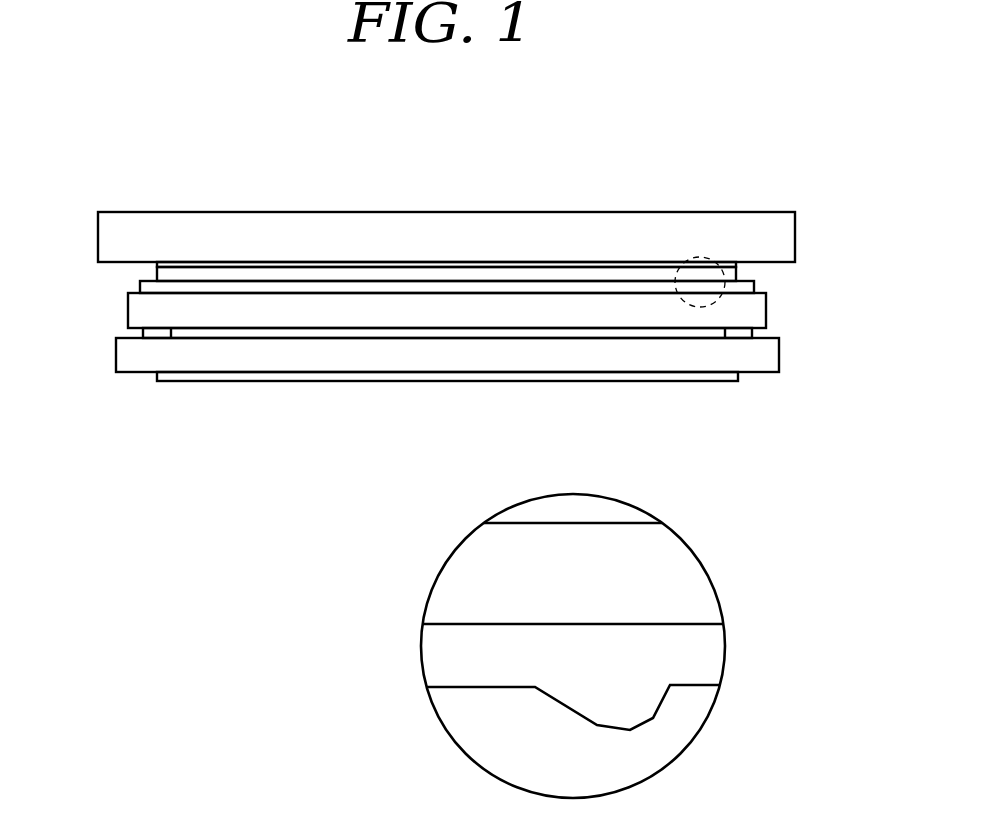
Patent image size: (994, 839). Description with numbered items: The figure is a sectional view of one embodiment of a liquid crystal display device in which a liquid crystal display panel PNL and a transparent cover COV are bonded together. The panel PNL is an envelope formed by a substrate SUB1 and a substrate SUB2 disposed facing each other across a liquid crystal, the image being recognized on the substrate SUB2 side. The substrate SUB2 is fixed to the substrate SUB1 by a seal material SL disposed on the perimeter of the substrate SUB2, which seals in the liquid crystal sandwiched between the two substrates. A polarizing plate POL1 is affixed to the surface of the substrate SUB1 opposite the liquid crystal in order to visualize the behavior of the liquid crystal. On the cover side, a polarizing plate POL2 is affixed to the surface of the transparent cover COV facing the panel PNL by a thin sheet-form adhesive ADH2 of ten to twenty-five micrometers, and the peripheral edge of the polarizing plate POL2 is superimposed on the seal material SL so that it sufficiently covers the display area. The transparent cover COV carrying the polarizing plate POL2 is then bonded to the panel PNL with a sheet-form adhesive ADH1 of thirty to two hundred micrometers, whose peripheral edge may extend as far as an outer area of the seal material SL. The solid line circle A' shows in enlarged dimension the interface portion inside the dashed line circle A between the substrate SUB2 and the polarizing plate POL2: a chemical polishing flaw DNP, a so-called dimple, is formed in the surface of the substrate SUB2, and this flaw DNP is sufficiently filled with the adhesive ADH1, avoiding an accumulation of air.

The transparent cover COV is at (402, 223).
The adhesive ADH2 is at (618, 263).
The polarizing plate POL2 is at (358, 273).
The adhesive ADH1 is at (502, 288).
The liquid crystal display panel PNL is at (85, 295).
The substrate SUB2 is at (186, 312).
The seal material SL is at (738, 330).
The substrate SUB1 is at (228, 360).
The polarizing plate POL1 is at (280, 377).
The dashed line circle A is at (708, 267).
The solid line circle A' is at (573, 553).
The chemical polishing flaw DNP is at (568, 703).